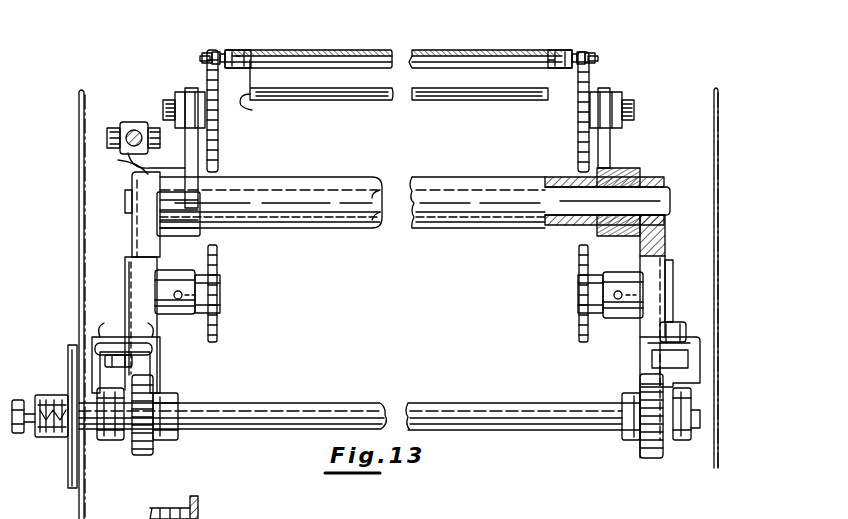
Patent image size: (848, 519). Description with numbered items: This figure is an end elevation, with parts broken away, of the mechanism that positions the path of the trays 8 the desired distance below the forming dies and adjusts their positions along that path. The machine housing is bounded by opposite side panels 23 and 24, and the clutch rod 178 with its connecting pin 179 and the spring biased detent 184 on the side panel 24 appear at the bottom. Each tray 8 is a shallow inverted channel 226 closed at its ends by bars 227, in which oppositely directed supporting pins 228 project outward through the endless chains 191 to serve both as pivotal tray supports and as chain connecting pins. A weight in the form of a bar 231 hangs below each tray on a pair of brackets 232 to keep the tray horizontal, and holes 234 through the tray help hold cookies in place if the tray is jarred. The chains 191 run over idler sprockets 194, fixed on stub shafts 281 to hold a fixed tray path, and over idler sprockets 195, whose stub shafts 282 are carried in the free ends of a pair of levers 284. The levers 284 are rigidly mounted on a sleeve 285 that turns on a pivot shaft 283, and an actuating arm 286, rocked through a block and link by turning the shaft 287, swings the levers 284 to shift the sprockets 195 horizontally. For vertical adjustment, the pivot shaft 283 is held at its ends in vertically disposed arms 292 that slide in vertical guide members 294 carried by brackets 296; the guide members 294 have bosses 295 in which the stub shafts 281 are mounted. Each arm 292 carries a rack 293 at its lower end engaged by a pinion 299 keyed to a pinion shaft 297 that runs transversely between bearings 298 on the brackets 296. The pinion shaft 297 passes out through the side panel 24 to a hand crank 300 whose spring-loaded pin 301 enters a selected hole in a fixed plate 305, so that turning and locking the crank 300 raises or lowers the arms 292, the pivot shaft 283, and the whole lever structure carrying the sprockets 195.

The trays 8 is at (377, 45).
The side panel 23 is at (718, 198).
The side panel 24 is at (79, 222).
The rod 178 is at (449, 512).
The pin 179 is at (730, 512).
The spring biased detent 184 is at (152, 507).
The endless chains 191 is at (205, 54).
The idler sprockets 194 is at (219, 323).
The idler sprockets 195 is at (218, 139).
The channels 226 is at (421, 50).
The bars 227 is at (238, 50).
The supporting pins 228 is at (202, 58).
The bar 231 is at (423, 103).
The brackets 232 is at (290, 118).
The holes 234 is at (283, 50).
The stub shafts 281 is at (200, 290).
The stub shafts 282 is at (165, 107).
The pivot shaft 283 is at (436, 228).
The levers 284 is at (198, 148).
The sleeve 285 is at (328, 228).
The actuating arm 286 is at (133, 161).
The shaft 287 is at (131, 123).
The arms 292 is at (132, 245).
The rack 293 is at (155, 460).
The vertical guide members 294 is at (125, 292).
The bosses 295 is at (221, 281).
The brackets 296 is at (92, 327).
The pinion shaft 297 is at (339, 402).
The bearings 298 is at (116, 442).
The pinions 299 is at (180, 440).
The hand crank 300 is at (21, 439).
The spring-loaded pin 301 is at (62, 393).
The fixed plate 305 is at (68, 478).